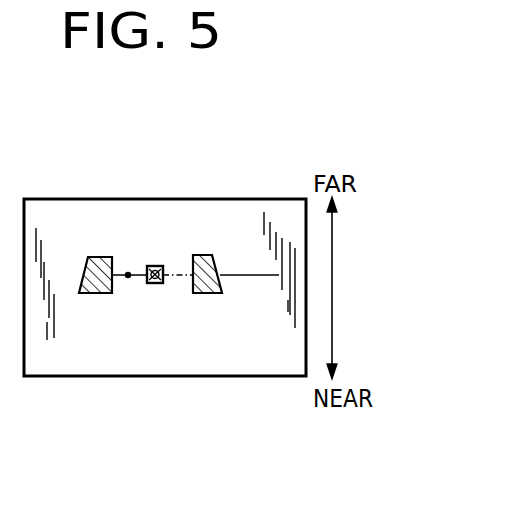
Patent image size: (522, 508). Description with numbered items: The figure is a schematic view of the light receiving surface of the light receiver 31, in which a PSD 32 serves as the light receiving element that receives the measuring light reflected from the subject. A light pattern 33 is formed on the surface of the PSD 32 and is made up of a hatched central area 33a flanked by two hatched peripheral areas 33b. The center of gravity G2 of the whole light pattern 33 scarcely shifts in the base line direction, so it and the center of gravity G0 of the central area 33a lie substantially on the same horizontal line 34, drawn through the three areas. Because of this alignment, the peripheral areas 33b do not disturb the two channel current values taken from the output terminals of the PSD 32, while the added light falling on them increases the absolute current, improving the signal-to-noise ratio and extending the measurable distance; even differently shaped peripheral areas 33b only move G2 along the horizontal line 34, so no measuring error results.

The light receiver 31 is at (74, 389).
The PSD 32 is at (248, 353).
The light pattern 33 is at (253, 156).
The central area 33a is at (159, 266).
The peripheral areas 33b is at (96, 256).
The horizontal line 34 is at (259, 277).
The center of gravity of the light pattern G2 is at (127, 279).
The center of gravity of the central area G0 is at (157, 283).